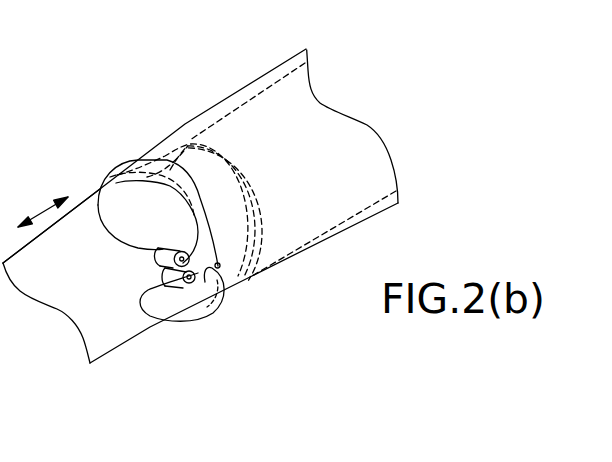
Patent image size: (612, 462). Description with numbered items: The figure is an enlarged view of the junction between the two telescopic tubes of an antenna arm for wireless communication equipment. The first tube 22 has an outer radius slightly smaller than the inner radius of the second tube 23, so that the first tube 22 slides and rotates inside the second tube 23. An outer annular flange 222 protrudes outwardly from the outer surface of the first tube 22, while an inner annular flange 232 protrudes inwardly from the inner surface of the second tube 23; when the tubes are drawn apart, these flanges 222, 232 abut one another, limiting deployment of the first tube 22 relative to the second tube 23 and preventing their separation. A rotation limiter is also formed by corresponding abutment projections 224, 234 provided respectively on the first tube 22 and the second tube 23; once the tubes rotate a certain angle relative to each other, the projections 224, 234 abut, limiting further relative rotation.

The second tube 23 is at (253, 84).
The first tube 22 is at (118, 346).
The outer annular flange 222 is at (216, 158).
The abutment projection 224 is at (98, 214).
The inner annular flange 232 is at (220, 267).
The abutment projection 234 is at (141, 302).